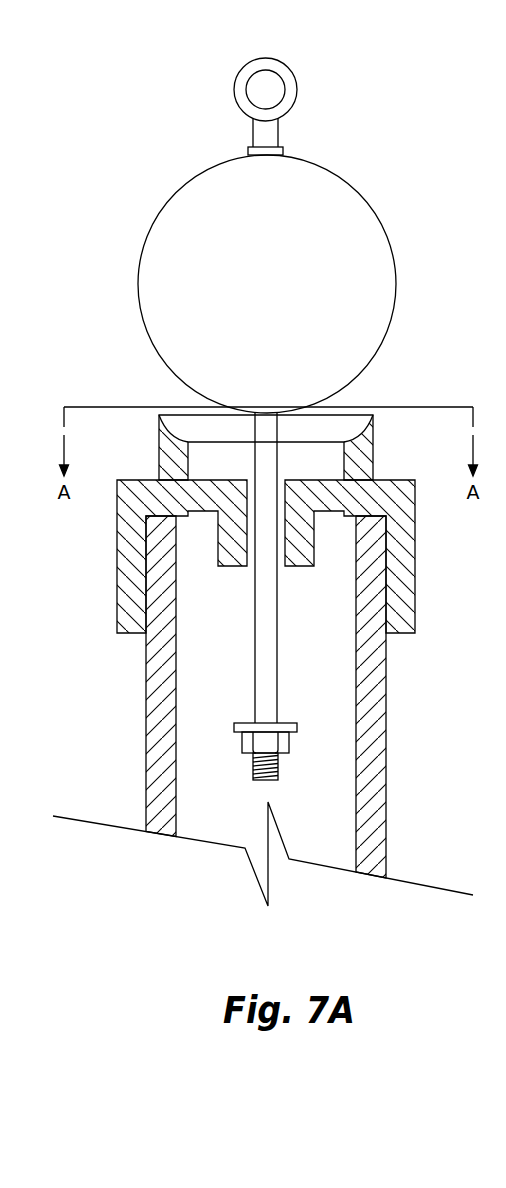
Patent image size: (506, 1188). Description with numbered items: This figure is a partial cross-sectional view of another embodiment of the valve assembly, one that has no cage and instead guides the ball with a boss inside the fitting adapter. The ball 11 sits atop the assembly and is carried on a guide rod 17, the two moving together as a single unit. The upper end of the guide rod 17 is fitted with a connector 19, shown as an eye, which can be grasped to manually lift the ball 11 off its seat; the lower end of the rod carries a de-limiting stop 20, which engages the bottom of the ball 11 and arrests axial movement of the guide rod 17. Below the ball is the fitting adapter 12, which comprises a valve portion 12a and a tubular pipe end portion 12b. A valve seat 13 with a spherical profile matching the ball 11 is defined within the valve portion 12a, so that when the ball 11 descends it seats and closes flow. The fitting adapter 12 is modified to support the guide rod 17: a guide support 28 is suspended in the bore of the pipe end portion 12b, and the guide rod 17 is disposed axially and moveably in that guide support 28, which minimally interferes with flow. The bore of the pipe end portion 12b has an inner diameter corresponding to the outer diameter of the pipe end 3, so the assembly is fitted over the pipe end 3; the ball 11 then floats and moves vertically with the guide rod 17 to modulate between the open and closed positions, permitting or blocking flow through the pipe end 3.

The pipe end 3 is at (386, 703).
The ball 11 is at (397, 278).
The fitting adapter 12 is at (265, 490).
The valve portion 12a is at (373, 448).
The pipe end portion 12b is at (118, 582).
The valve seat 13 is at (355, 412).
The guide rod 17 is at (278, 647).
The connector 19 is at (298, 88).
The de-limiting stop 20 is at (278, 771).
The guide support 28 is at (218, 549).